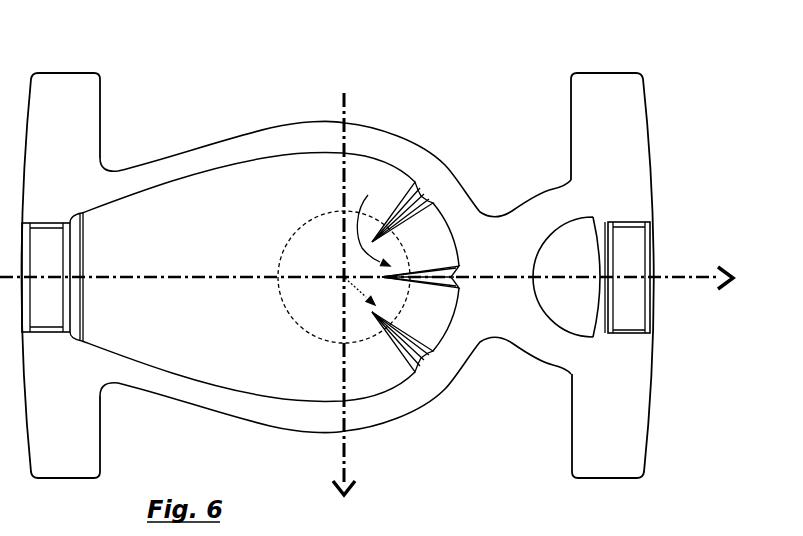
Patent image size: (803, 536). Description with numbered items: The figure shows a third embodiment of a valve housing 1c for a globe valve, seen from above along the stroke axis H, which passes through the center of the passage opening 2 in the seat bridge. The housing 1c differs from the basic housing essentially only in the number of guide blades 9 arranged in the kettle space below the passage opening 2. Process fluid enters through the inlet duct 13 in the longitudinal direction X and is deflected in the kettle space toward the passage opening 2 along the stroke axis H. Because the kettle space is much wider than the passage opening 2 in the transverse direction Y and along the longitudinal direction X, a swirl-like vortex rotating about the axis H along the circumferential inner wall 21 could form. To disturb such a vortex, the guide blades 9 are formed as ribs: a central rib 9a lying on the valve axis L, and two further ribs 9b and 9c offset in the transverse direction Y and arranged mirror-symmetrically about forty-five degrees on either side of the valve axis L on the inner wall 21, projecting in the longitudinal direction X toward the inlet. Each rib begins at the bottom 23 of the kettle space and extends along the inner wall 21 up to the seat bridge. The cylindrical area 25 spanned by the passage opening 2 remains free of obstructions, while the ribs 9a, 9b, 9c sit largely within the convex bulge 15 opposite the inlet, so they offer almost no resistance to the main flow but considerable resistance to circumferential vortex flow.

The valve housing 1c is at (158, 177).
The passage opening 2 is at (317, 222).
The guide blade 9 is at (428, 232).
The rib 9a is at (461, 270).
The rib 9b is at (420, 197).
The rib 9c is at (420, 358).
The inlet duct 13 is at (140, 330).
The inner wall 21 is at (243, 368).
The cylindrical area 25 is at (298, 316).
The bottom 23 is at (326, 308).
The convex bulge 15 is at (380, 378).
The stroke axis H is at (332, 290).
The longitudinal direction X is at (706, 275).
The transverse direction Y is at (347, 449).
The valve axis L is at (675, 276).